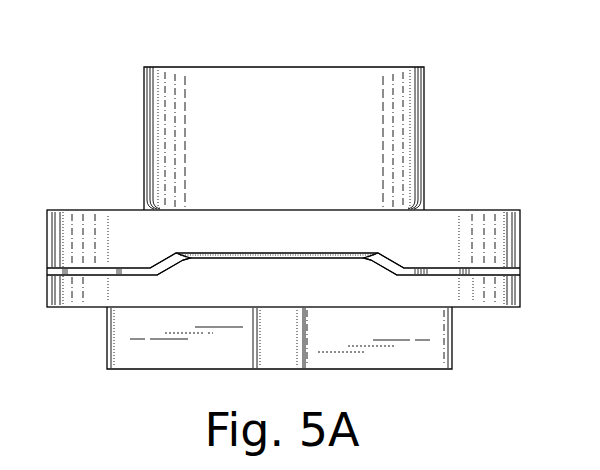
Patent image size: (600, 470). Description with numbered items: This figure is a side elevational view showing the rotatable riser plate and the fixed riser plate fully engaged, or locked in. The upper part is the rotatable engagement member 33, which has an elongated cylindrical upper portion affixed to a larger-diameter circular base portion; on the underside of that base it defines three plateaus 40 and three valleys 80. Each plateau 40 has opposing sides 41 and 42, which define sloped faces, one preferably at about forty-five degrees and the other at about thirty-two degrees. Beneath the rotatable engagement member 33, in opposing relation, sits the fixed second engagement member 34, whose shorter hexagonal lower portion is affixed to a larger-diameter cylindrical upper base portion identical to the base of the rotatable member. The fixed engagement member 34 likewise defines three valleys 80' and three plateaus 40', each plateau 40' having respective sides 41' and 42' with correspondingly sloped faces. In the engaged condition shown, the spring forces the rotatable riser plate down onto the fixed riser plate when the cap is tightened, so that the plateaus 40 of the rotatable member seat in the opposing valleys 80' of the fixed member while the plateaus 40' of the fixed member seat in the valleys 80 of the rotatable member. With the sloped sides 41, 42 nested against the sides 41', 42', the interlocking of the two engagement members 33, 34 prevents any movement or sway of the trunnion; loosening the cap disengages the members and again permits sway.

The rotatable engagement member 33 is at (299, 150).
The fixed second engagement member 34 is at (292, 348).
The plateaus 40 is at (283, 258).
The plateaus 40' is at (277, 279).
The side of plateau 41 is at (393, 248).
The side of plateau 41' is at (184, 275).
The side of plateau 42 is at (170, 241).
The side of plateau 42' is at (367, 275).
The valleys 80 is at (283, 242).
The valleys 80' is at (283, 282).